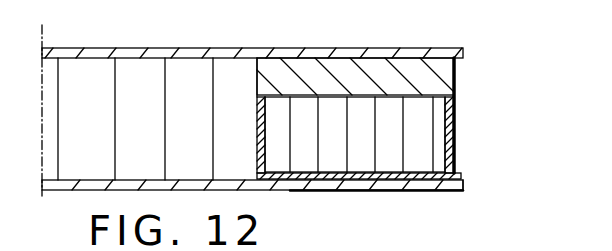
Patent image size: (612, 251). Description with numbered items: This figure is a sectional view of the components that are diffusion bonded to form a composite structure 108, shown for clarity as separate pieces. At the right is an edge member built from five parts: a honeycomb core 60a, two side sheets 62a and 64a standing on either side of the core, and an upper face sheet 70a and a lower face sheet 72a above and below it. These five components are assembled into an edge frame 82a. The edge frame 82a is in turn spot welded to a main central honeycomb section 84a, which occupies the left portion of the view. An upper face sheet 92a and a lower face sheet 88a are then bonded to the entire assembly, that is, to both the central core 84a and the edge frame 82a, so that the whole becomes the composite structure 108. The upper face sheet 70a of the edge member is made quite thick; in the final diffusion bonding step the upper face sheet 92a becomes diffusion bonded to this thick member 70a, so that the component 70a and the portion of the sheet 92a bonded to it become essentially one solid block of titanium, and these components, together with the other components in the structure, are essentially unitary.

The upper face sheet 92a is at (117, 52).
The side sheet 64a is at (258, 118).
The upper face sheet of edge member 70a is at (416, 70).
The edge frame 82a is at (466, 97).
The honeycomb core 60a is at (427, 127).
The side sheet 62a is at (452, 155).
The composite structure 108 is at (452, 190).
The lower face sheet of edge member 72a is at (388, 180).
The lower face sheet 88a is at (277, 191).
The main central honeycomb section 84a is at (72, 170).